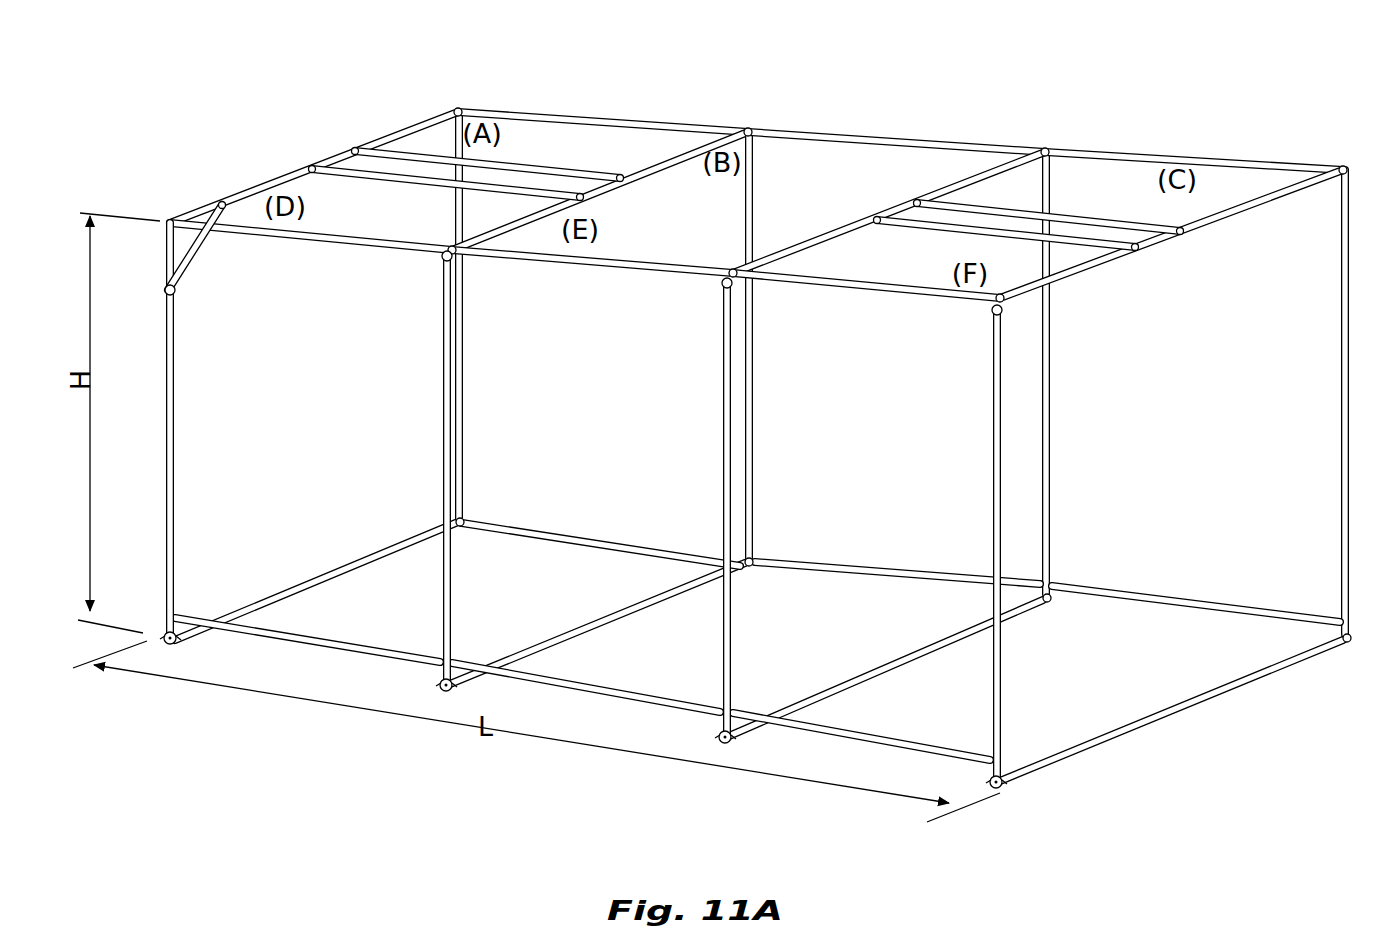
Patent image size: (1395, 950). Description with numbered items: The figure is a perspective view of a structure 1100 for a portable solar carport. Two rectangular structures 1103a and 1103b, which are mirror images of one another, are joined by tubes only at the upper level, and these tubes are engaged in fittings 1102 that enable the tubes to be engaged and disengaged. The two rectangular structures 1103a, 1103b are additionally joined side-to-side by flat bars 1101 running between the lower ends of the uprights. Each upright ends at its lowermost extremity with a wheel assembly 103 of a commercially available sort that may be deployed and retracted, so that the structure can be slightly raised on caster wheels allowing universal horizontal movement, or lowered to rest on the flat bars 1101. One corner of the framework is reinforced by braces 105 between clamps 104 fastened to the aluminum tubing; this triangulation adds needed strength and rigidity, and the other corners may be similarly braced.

The modular frame structure 1100 is at (733, 397).
The rectangular structure 1103a is at (510, 106).
The rectangular structure 1103b is at (1126, 143).
The fittings 1102 is at (748, 128).
The flat bars 1101 is at (345, 567).
The wheel assembly 103 is at (192, 644).
The clamps 104 is at (163, 290).
The braces 105 is at (206, 250).